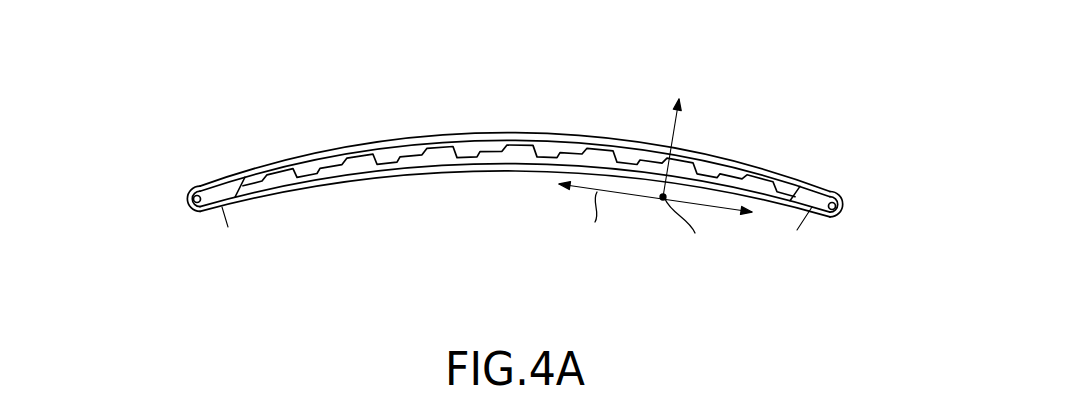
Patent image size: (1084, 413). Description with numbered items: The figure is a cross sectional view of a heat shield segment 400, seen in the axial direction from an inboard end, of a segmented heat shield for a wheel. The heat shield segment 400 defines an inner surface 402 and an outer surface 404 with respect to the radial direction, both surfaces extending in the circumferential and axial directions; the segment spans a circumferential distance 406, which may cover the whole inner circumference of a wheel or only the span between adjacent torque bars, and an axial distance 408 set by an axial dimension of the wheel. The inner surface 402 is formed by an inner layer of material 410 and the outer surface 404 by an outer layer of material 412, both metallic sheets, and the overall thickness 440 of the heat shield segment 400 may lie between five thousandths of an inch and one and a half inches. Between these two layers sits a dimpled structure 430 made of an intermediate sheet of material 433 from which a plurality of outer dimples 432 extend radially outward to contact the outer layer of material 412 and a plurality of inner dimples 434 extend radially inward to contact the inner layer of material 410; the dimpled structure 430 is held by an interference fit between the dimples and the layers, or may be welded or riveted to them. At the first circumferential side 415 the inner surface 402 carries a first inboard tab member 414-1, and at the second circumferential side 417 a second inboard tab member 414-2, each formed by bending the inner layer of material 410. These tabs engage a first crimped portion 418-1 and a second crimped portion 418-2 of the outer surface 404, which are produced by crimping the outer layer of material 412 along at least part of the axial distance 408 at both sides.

The heat shield segment 400 is at (232, 97).
The inner surface 402 is at (314, 189).
The outer surface 404 is at (445, 139).
The circumferential distance 406 is at (722, 203).
The axial distance 408 is at (663, 197).
The inner layer of material 410 is at (353, 177).
The outer layer of material 412 is at (508, 140).
The dimpled structure 430 is at (592, 152).
The outer dimples 432 is at (408, 146).
The intermediate sheet of material 433 is at (502, 152).
The inner dimples 434 is at (463, 167).
The thickness 440 is at (306, 138).
The first inboard tab member 414-1 is at (815, 200).
The second inboard tab member 414-2 is at (217, 192).
The first circumferential side 415 is at (864, 176).
The second circumferential side 417 is at (163, 176).
The first crimped portion 418-1 is at (840, 207).
The second crimped portion 418-2 is at (188, 195).